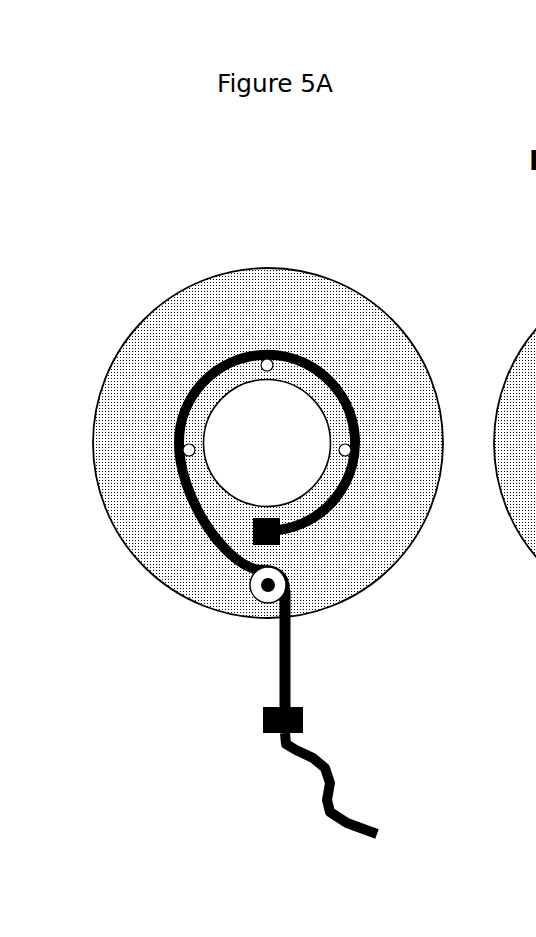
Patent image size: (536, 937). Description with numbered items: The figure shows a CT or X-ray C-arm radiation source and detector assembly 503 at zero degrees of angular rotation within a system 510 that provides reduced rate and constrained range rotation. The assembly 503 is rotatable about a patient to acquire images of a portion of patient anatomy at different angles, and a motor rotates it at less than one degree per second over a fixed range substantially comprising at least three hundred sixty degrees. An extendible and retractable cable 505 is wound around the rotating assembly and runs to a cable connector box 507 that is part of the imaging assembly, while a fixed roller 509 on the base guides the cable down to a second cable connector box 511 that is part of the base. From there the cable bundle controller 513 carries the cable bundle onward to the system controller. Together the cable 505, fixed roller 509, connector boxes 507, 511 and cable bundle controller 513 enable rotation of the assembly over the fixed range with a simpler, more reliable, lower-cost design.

The radiation source and detector assembly 503 is at (366, 292).
The extendible and retractable cable 505 is at (354, 382).
The cable connector box 507 is at (302, 549).
The fixed roller 509 is at (239, 608).
The system 510 is at (283, 243).
The cable connector box 511 is at (246, 739).
The cable bundle controller 513 is at (321, 839).